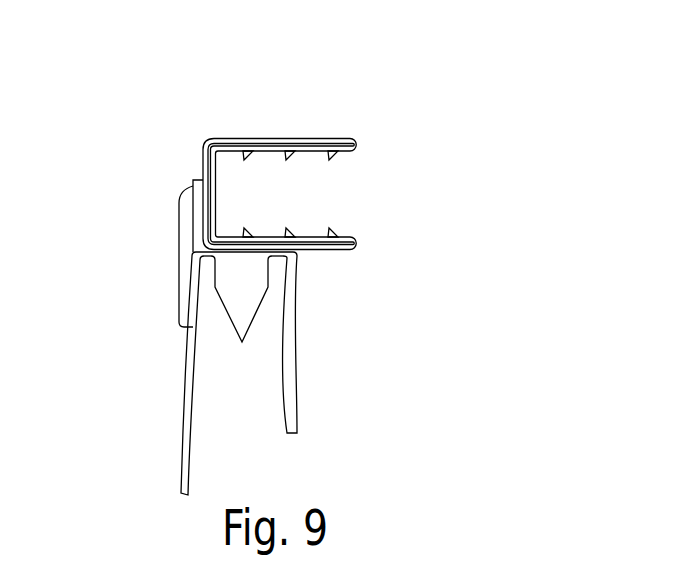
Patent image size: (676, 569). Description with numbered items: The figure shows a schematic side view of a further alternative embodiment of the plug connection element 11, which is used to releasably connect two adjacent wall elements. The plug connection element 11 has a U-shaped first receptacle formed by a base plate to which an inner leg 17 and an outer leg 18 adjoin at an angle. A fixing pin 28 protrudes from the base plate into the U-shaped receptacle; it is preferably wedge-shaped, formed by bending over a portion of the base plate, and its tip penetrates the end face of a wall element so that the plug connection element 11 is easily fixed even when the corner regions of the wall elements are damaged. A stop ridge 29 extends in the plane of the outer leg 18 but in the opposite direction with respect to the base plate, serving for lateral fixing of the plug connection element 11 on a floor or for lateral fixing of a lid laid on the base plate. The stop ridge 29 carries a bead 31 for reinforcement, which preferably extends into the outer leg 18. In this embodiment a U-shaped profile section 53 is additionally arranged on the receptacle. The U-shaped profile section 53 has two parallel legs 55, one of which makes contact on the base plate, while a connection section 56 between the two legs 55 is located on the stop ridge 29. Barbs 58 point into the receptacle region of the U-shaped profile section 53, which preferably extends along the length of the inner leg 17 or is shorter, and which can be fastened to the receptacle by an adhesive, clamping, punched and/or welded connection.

The plug connection element 11 is at (122, 386).
The inner leg 17 is at (296, 377).
The outer leg 18 is at (187, 421).
The fixing pin 28 is at (232, 332).
The stop ridge 29 is at (158, 286).
The bead 31 is at (178, 221).
The U-shaped profile section 53 is at (325, 102).
The legs 55 is at (268, 137).
The connection section 56 is at (200, 158).
The barbs 58 is at (334, 164).